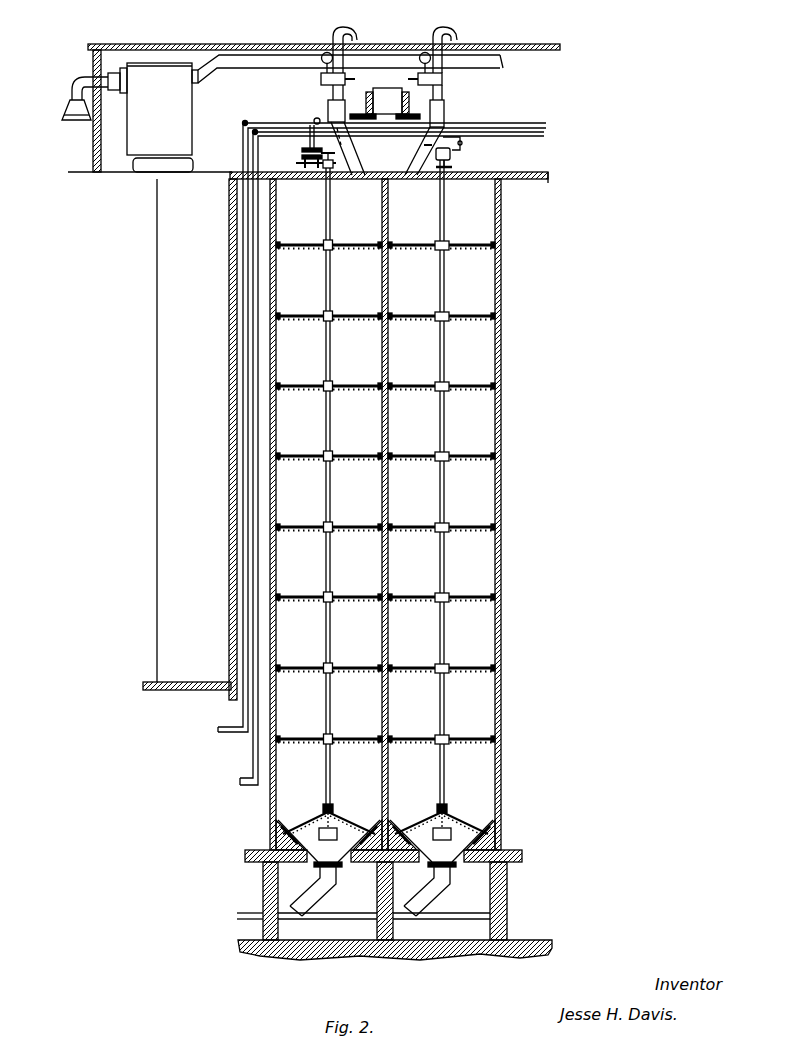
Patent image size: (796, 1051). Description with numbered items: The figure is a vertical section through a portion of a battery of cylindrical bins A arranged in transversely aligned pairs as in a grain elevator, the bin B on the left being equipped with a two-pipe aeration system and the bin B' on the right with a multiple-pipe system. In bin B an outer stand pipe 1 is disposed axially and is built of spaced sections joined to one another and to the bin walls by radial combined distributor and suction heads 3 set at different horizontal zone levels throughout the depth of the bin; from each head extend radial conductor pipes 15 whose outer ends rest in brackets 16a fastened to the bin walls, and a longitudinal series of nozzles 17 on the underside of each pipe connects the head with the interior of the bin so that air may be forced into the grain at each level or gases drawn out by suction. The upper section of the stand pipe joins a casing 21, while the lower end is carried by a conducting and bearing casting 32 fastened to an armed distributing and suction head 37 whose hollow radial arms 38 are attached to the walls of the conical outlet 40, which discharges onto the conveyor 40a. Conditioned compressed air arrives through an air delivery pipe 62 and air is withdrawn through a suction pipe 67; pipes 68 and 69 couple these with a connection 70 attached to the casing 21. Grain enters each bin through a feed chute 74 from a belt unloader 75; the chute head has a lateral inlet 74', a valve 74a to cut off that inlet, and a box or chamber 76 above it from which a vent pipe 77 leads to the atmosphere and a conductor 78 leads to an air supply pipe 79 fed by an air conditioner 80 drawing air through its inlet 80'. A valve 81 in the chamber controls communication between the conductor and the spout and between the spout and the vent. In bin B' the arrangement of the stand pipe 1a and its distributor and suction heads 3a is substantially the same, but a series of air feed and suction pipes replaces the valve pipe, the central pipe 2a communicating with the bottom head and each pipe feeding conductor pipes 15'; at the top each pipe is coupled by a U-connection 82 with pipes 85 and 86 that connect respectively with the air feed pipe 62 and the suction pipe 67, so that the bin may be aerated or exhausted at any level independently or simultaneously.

The stand pipe 1 is at (326, 210).
The second treating chamber 1a is at (445, 283).
The central air feed and suction pipe 2a is at (418, 188).
The radial combined distributor and suction head 3 is at (332, 250).
The central pipe of second chamber 3a is at (436, 252).
The radial conductor pipe 15 is at (329, 481).
The conductor pipe 15' is at (441, 492).
The bracket 16a is at (279, 596).
The nozzle 17 is at (354, 391).
The casing 21 is at (340, 166).
The conducting and bearing casting 32 is at (334, 804).
The armed distributing and suction head 37 is at (321, 816).
The hollow radial arm 38 is at (347, 821).
The conical outlet 40 is at (270, 822).
The conveyor 40a is at (358, 913).
The air delivery pipe 62 is at (244, 145).
The suction pipe 67 is at (253, 186).
The pipe 68 is at (317, 118).
The pipe 69 is at (306, 143).
The connection 70 is at (317, 176).
The feed chute 74 is at (349, 143).
The valve 74a is at (328, 104).
The lateral inlet 74' is at (362, 98).
The belt unloader 75 is at (388, 94).
The box or chamber 76 is at (343, 95).
The vent pipe 77 is at (352, 30).
The conductor 78 is at (321, 77).
The air supply pipe 79 is at (268, 62).
The air conditioner 80 is at (153, 117).
The inlet 80' is at (71, 98).
The valve 81 is at (353, 104).
The U-connection 82 is at (452, 156).
The pipe 85 is at (426, 140).
The pipe 86 is at (461, 137).
The battery of cylindrical bins A is at (519, 230).
The bin B is at (296, 435).
The bin B' is at (466, 431).